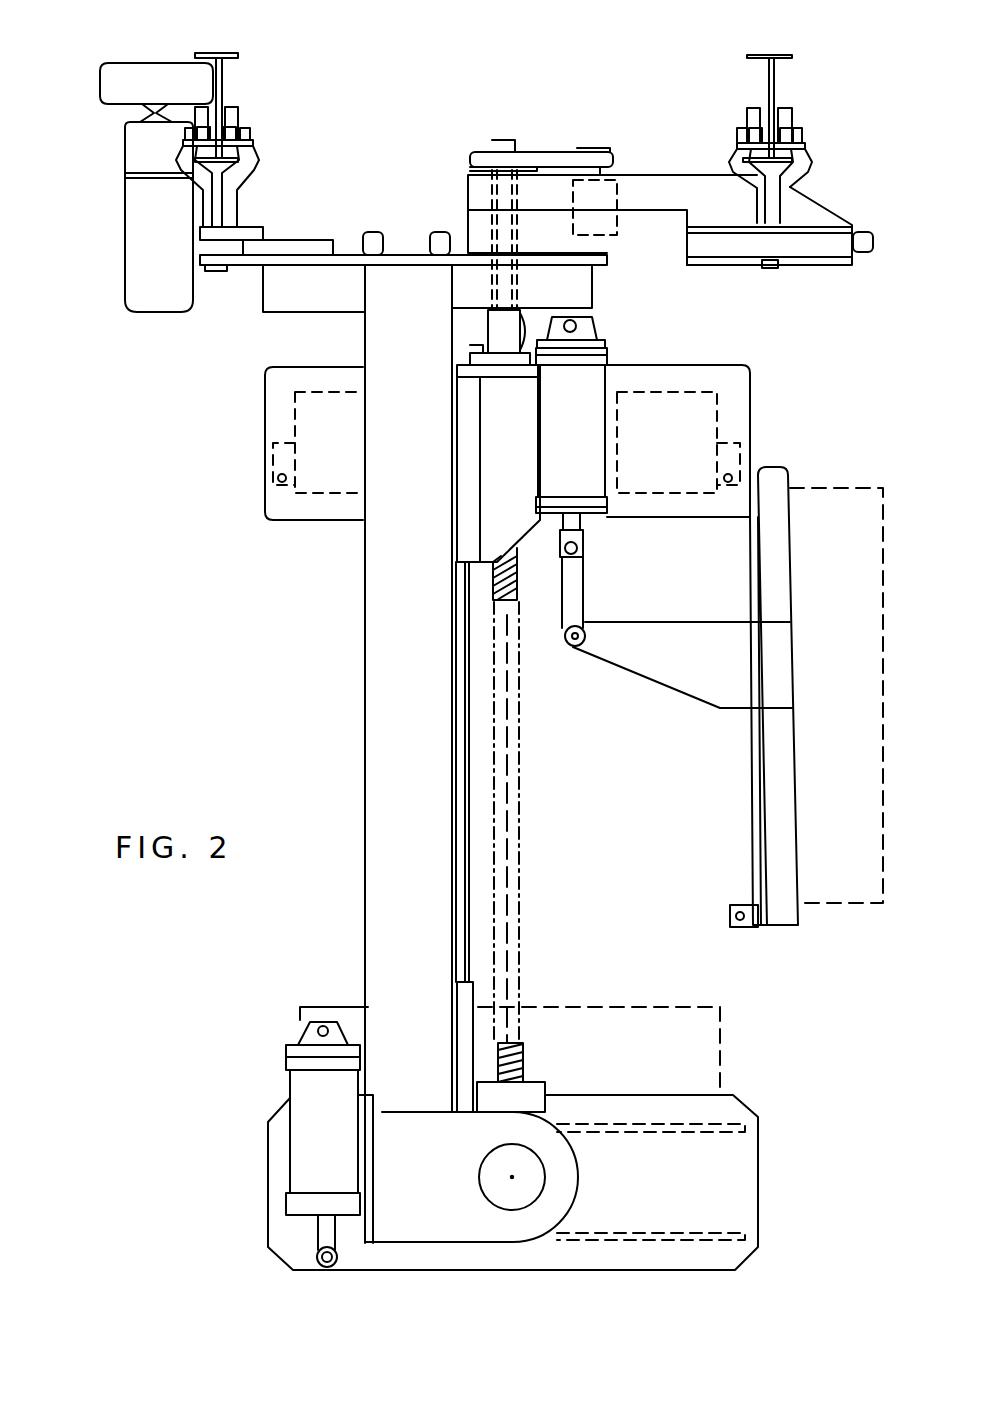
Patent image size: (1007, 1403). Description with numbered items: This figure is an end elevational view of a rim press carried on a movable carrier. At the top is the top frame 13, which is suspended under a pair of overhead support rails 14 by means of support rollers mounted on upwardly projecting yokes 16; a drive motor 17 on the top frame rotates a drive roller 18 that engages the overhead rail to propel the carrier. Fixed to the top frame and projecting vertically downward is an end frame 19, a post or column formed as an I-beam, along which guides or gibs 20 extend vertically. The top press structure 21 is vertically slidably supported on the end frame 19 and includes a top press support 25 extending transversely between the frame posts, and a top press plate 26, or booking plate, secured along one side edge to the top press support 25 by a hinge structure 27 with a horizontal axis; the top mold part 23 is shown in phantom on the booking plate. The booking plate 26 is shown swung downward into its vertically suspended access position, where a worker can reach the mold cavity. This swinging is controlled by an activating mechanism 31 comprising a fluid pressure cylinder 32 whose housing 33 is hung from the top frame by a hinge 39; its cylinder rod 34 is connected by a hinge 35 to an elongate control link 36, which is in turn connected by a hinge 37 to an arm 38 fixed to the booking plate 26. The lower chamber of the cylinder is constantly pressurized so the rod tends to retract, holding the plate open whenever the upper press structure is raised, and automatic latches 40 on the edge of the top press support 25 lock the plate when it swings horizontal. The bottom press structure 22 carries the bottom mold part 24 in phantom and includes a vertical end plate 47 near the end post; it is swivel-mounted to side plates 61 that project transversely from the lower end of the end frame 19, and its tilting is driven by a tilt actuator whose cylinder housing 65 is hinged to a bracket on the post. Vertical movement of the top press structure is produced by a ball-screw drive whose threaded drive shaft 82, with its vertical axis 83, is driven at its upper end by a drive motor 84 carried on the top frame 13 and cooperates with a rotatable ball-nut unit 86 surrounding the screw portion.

The top frame 13 is at (297, 277).
The overhead support rails 14 is at (220, 82).
The yokes 16 is at (805, 175).
The drive motors 17 is at (130, 240).
The drive rollers 18 is at (118, 70).
The end frames 19 is at (387, 668).
The guides or gibs 20 is at (462, 842).
The top press structure 21 is at (246, 409).
The bottom press structure 22 is at (767, 1138).
The top mold part 23 is at (850, 488).
The bottom mold part 24 is at (733, 1020).
The top press support 25 is at (728, 367).
The top press plate 26 is at (770, 790).
The hinge structure 27 is at (732, 476).
The activating mechanism 31 is at (625, 503).
The fluid pressure cylinder 32 is at (537, 417).
The cylinder housing 33 is at (592, 477).
The cylinder rod 34 is at (582, 525).
The hinge 35 is at (582, 548).
The control link 36 is at (575, 605).
The hinge 37 is at (572, 647).
The arm 38 is at (673, 678).
The hinge 39 is at (576, 326).
The latches 40 is at (280, 460).
The end plates 47 is at (737, 1190).
The side plates 61 is at (452, 1225).
The cylinder housing 65 is at (305, 1092).
The drive shaft 82 is at (508, 943).
The axis 83 is at (507, 803).
The drive motor 84 is at (605, 195).
The ball-nut unit 86 is at (490, 327).